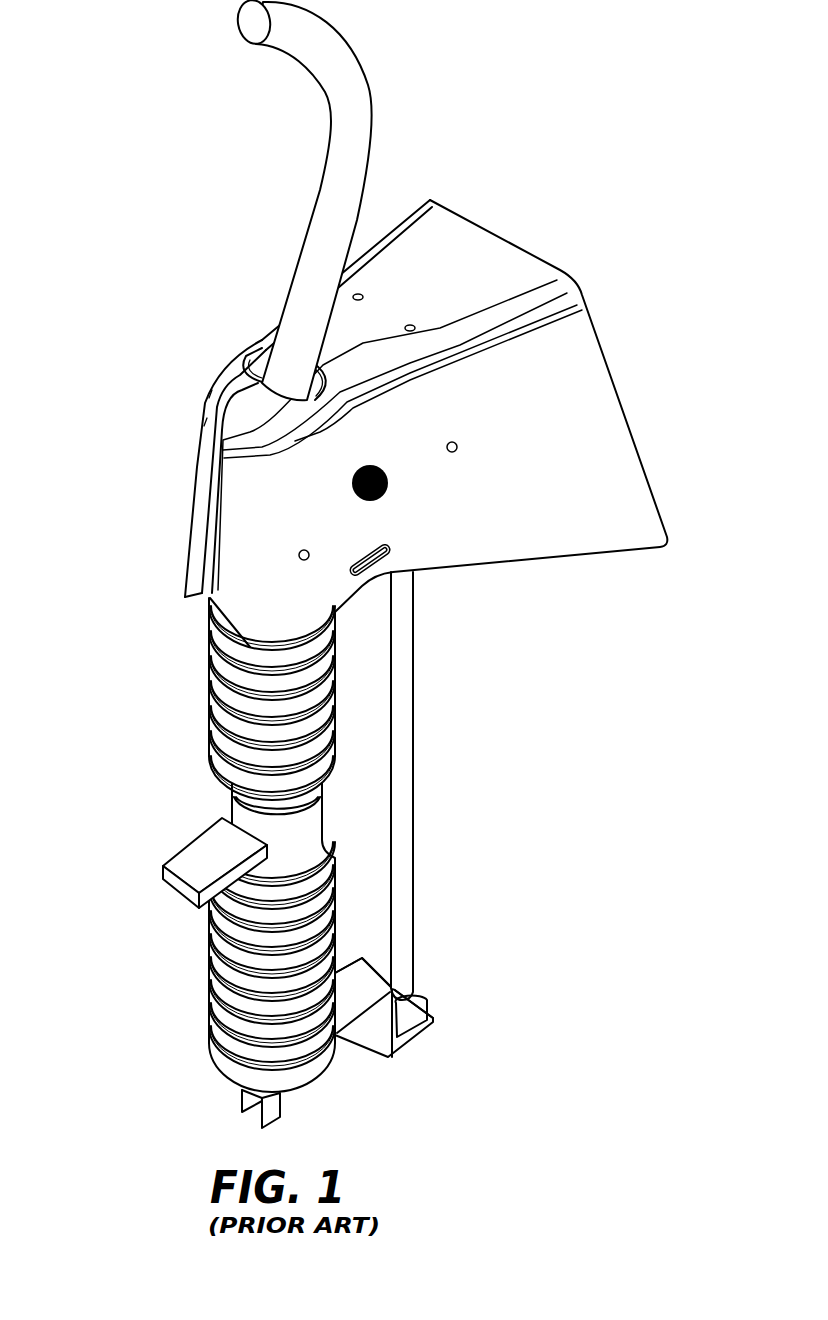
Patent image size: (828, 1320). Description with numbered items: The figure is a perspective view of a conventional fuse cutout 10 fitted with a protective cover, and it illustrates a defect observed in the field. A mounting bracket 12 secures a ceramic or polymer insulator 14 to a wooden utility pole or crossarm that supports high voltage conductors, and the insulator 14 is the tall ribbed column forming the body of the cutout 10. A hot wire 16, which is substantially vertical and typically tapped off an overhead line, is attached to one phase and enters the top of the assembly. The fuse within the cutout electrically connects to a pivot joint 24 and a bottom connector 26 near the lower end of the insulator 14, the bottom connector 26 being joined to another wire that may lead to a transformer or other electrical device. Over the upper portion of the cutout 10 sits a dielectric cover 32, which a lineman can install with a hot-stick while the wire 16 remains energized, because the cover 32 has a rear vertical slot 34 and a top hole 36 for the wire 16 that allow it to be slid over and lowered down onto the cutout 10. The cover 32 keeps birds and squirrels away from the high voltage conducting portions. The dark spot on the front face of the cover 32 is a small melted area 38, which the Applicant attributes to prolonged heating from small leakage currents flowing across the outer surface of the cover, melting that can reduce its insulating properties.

The fuse cutout 10 is at (371, 564).
The mounting bracket 12 is at (198, 852).
The insulator 14 is at (209, 687).
The hot wire 16 is at (370, 105).
The pivot joint 24 is at (412, 1018).
The bottom connector 26 is at (276, 1112).
The dielectric cover 32 is at (505, 270).
The rear vertical slot 34 is at (211, 466).
The top hole 36 is at (266, 341).
The melted area 38 is at (388, 490).